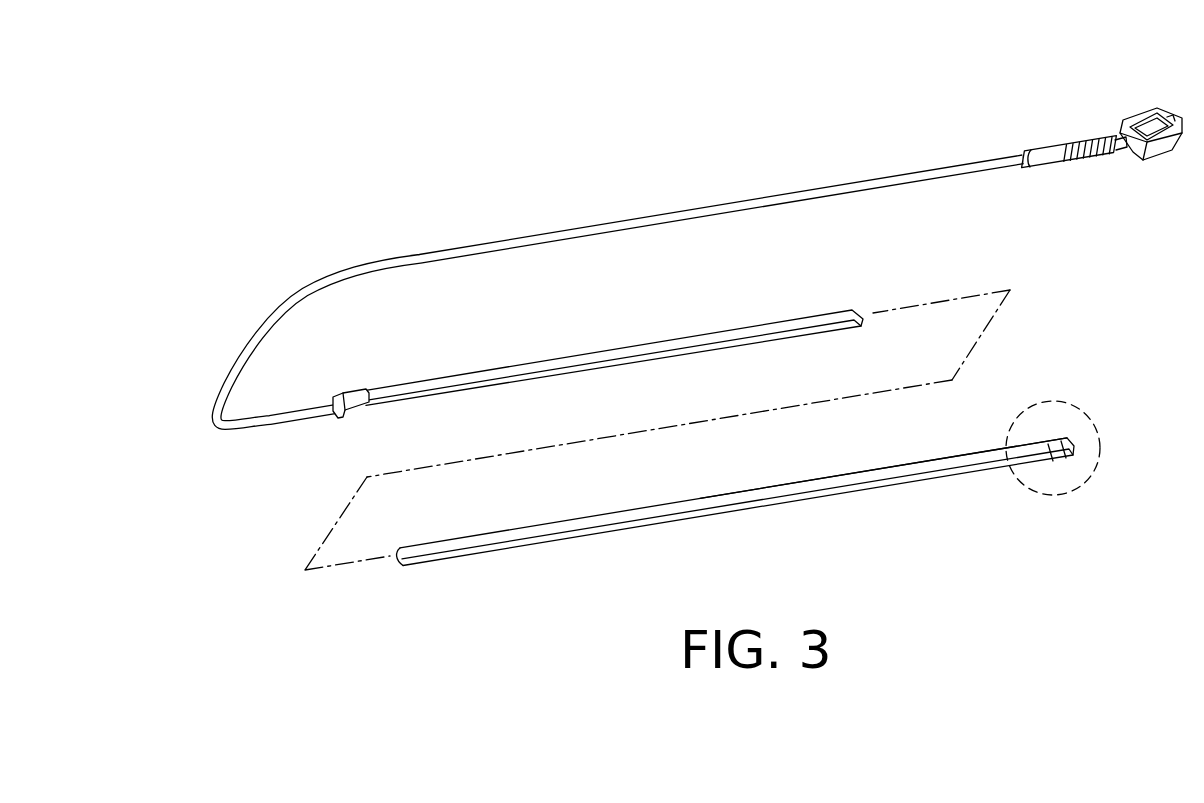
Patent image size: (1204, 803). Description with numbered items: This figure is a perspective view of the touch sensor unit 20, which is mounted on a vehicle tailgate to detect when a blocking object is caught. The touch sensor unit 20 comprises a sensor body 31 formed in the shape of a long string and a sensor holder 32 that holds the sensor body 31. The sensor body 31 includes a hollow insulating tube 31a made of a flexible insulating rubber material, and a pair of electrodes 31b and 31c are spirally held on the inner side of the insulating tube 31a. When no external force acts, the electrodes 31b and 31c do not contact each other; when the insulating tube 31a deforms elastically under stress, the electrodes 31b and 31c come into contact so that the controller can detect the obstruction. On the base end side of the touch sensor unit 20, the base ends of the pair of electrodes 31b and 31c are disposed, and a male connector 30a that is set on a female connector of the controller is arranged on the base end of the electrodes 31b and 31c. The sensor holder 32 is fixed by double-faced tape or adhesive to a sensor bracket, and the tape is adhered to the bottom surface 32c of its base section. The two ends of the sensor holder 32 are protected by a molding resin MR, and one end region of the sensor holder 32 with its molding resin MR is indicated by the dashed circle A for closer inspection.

The touch sensor unit 20 is at (443, 202).
The sensor body 31 is at (675, 212).
The insulating tube 31a is at (855, 184).
The electrode 31b is at (1117, 131).
The electrode 31c is at (1122, 153).
The male connector 30a is at (1148, 111).
The sensor holder 32 is at (686, 524).
The bottom surface 32c is at (833, 484).
The molding resin MR is at (347, 397).
The enlarged region A is at (1040, 495).